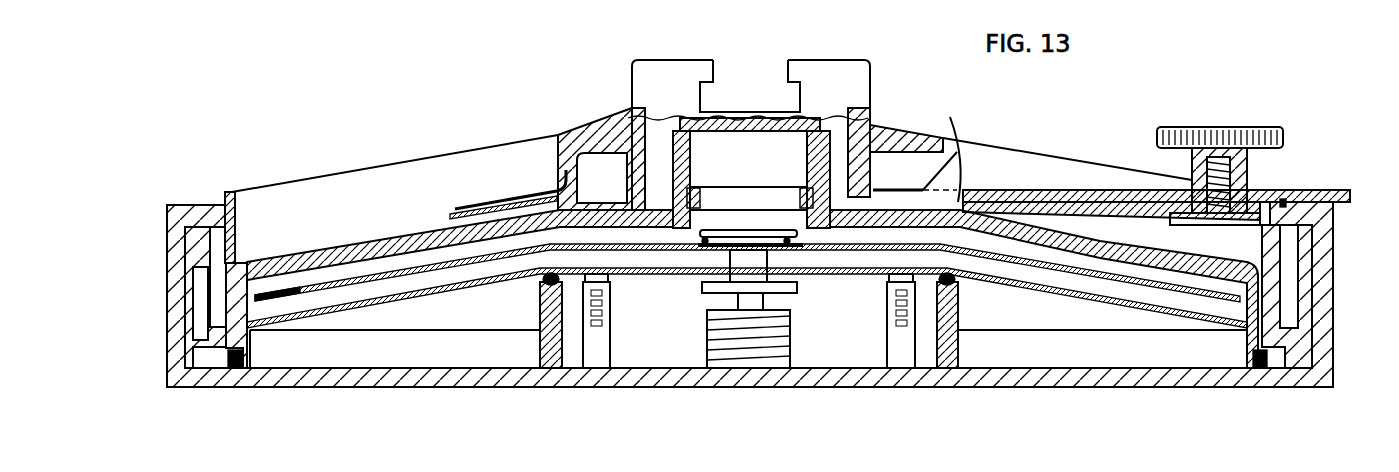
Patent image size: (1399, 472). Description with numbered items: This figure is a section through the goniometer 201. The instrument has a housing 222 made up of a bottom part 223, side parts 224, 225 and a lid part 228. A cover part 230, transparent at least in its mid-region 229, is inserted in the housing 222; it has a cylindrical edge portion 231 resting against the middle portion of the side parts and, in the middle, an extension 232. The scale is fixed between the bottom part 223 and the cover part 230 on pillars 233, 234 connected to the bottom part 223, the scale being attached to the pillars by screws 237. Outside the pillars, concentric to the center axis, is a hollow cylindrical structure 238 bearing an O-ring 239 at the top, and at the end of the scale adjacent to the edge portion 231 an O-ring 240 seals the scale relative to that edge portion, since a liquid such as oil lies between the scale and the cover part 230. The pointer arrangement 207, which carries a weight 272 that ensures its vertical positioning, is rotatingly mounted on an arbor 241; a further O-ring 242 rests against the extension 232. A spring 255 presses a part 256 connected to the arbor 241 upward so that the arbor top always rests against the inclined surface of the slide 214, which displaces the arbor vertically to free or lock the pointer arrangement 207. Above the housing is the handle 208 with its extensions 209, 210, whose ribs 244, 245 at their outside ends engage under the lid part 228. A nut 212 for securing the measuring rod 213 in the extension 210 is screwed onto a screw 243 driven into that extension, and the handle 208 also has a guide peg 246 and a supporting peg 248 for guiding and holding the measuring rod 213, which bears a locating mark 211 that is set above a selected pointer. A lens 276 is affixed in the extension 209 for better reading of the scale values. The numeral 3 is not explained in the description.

The sheet 3 is at (371, 305).
The goniometer 201 is at (1283, 198).
The pointer arrangement 207 is at (432, 228).
The handle 208 is at (808, 70).
The extension 209 is at (593, 127).
The extension 210 is at (1035, 165).
The locating mark 211 is at (530, 197).
The nut 212 is at (1192, 127).
The measuring rod 213 is at (1077, 193).
The slide 214 is at (753, 70).
The housing 222 is at (278, 392).
The bottom part 223 is at (317, 380).
The side part 224 is at (172, 388).
The side part 225 is at (1328, 287).
The lid part 228 is at (193, 205).
The mid-region 229 is at (483, 222).
The cover part 230 is at (988, 223).
The cylindrical edge portion 231 is at (200, 233).
The extension 232 is at (828, 133).
The pillar 233 is at (593, 348).
The pillar 234 is at (893, 347).
The screw 237 is at (612, 300).
The hollow cylindrical structure 238 is at (552, 300).
The O-ring 239 is at (548, 283).
The O-ring 240 is at (238, 370).
The arbor 241 is at (790, 263).
The O-ring 242 is at (800, 193).
The screw 243 is at (1216, 170).
The rib 244 is at (238, 233).
The rib 245 is at (1263, 190).
The guide peg 246 is at (950, 140).
The supporting peg 248 is at (910, 162).
The spring 255 is at (725, 368).
The part 256 is at (700, 289).
The weight 272 is at (312, 290).
The lens 276 is at (393, 183).